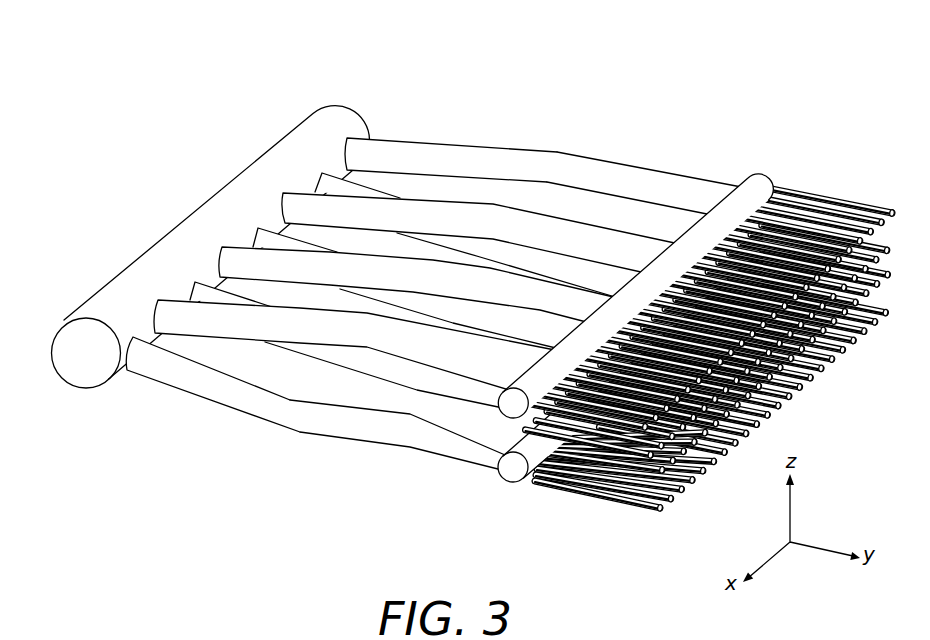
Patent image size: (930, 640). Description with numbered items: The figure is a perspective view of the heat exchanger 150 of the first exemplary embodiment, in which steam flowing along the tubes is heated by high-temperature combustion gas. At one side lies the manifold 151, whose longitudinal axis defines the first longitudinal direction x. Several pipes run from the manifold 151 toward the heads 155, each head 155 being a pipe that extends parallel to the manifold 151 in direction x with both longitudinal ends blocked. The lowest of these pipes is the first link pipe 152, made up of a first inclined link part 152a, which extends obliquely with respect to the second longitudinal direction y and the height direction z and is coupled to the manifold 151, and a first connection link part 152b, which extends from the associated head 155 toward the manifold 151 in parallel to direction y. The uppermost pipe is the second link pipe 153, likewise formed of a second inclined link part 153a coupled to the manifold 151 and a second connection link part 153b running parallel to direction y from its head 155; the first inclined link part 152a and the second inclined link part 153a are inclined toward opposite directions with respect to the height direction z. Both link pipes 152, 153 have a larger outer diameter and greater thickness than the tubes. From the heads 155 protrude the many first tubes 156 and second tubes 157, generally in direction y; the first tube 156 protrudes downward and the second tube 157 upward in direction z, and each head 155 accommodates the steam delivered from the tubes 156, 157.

The heat exchanger 150 is at (473, 302).
The manifold 151 is at (150, 277).
The first link pipe 152 is at (319, 430).
The first inclined link part 152a is at (233, 395).
The first connection link part 152b is at (403, 437).
The second link pipe 153 is at (548, 140).
The second inclined link part 153a is at (445, 157).
The second connection link part 153b is at (643, 187).
The head 155 is at (686, 342).
The first tube 156 is at (590, 490).
The second tube 157 is at (632, 463).